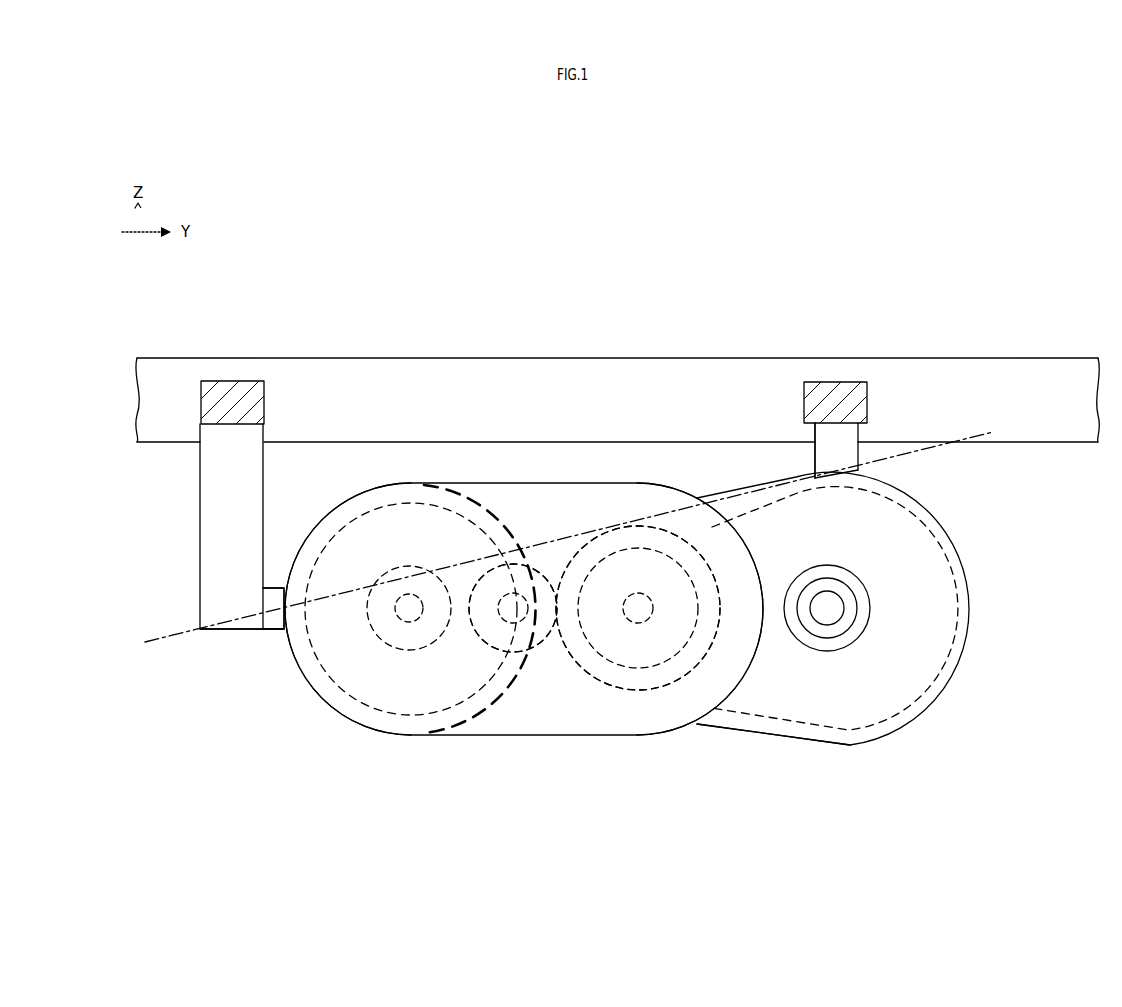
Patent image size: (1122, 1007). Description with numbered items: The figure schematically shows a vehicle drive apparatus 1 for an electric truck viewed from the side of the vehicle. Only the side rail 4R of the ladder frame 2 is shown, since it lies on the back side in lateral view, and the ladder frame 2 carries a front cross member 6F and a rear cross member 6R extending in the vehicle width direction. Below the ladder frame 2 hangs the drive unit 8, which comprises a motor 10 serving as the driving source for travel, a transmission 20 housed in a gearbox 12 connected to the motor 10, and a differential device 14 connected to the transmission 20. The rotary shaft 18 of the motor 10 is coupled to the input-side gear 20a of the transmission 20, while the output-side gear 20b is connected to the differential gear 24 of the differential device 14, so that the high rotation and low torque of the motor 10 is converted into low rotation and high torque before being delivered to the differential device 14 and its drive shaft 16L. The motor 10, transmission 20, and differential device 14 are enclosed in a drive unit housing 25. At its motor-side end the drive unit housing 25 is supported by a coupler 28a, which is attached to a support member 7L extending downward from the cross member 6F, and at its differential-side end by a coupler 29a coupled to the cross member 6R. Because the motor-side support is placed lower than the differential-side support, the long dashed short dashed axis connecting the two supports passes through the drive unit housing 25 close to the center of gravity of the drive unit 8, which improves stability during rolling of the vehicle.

The vehicle drive apparatus 1 is at (1015, 568).
The ladder frame 2 is at (972, 330).
The side rail 4R is at (660, 358).
The cross member 6F is at (233, 381).
The cross member 6R is at (838, 382).
The support member 7L is at (200, 548).
The drive unit 8 is at (502, 757).
The motor 10 is at (302, 677).
The gearbox 12 is at (653, 737).
The differential device 14 is at (892, 728).
The drive shaft 16L is at (830, 630).
The rotary shaft 18 is at (397, 618).
The transmission 20 is at (641, 800).
The gear 20a is at (537, 670).
The gear 20b is at (618, 672).
The differential gear 24 is at (767, 718).
The drive unit housing 25 is at (480, 732).
The coupler 28a is at (273, 633).
The coupler 29a is at (862, 470).